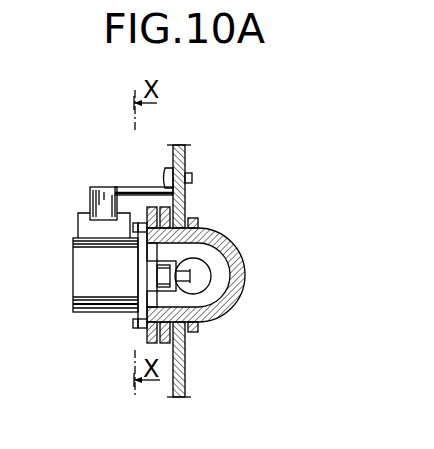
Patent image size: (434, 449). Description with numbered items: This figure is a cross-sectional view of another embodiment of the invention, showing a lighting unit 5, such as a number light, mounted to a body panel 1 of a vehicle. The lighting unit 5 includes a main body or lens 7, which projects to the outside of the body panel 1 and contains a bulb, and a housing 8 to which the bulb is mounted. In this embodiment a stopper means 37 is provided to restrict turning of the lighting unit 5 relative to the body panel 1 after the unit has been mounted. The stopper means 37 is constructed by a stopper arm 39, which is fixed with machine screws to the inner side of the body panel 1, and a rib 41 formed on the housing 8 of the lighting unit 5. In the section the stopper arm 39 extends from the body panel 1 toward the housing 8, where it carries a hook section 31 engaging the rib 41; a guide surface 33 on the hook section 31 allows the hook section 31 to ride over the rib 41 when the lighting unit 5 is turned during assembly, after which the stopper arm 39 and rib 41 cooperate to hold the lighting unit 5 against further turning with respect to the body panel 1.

The body panel 1 is at (186, 160).
The lighting unit 5 is at (68, 262).
The main body or lens 7 is at (221, 307).
The housing 8 is at (98, 313).
The hook section 31 is at (92, 205).
The guide surface 33 is at (97, 210).
The stopper means 37 is at (104, 179).
The stopper arm 39 is at (135, 189).
The rib 41 is at (79, 224).